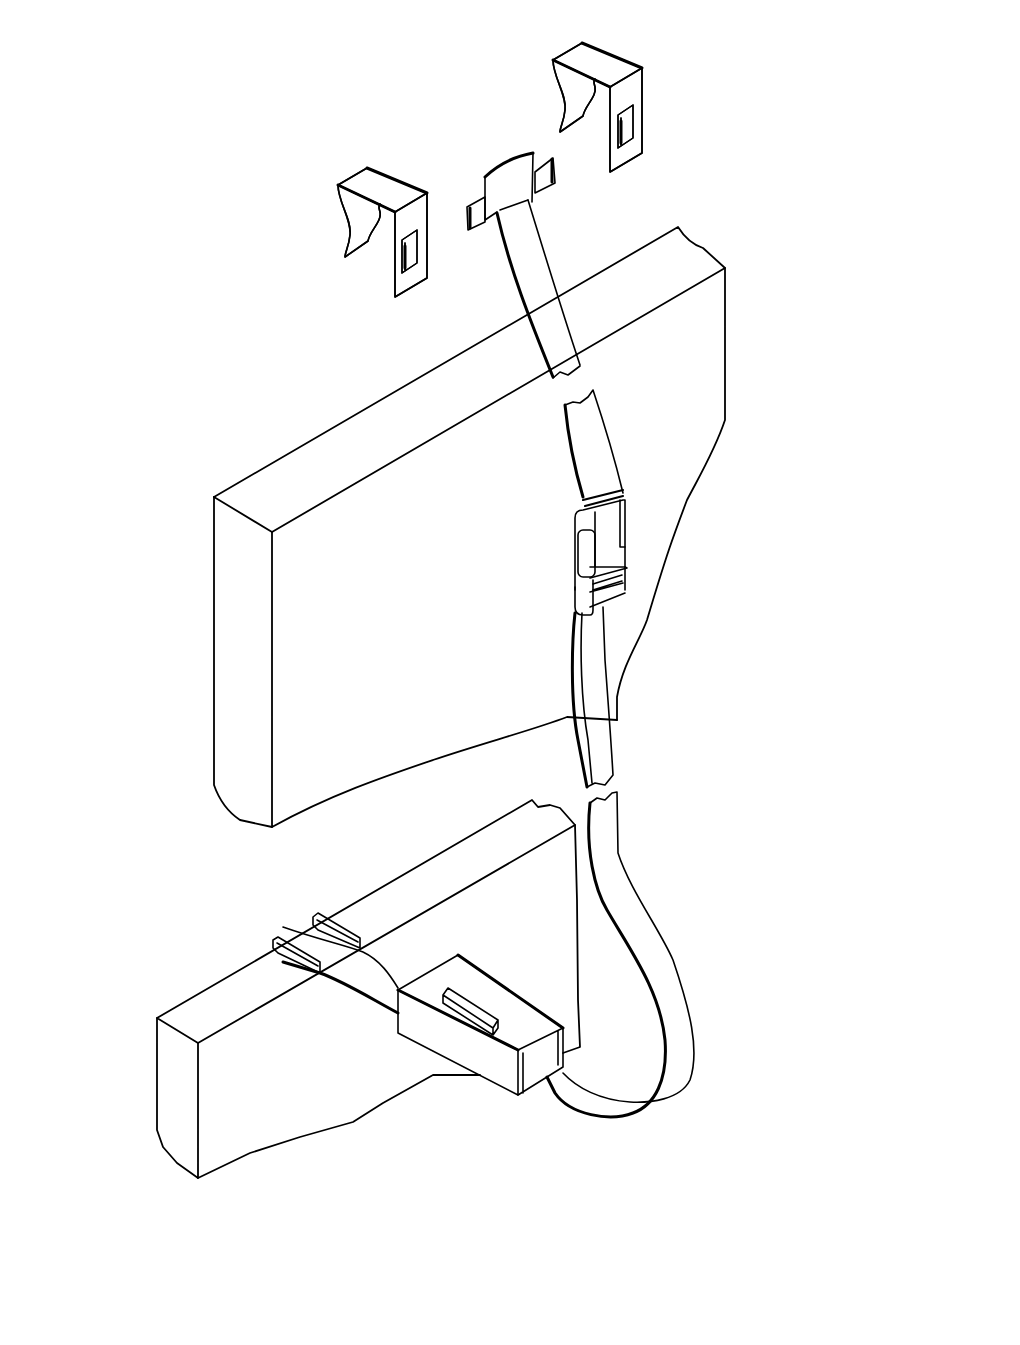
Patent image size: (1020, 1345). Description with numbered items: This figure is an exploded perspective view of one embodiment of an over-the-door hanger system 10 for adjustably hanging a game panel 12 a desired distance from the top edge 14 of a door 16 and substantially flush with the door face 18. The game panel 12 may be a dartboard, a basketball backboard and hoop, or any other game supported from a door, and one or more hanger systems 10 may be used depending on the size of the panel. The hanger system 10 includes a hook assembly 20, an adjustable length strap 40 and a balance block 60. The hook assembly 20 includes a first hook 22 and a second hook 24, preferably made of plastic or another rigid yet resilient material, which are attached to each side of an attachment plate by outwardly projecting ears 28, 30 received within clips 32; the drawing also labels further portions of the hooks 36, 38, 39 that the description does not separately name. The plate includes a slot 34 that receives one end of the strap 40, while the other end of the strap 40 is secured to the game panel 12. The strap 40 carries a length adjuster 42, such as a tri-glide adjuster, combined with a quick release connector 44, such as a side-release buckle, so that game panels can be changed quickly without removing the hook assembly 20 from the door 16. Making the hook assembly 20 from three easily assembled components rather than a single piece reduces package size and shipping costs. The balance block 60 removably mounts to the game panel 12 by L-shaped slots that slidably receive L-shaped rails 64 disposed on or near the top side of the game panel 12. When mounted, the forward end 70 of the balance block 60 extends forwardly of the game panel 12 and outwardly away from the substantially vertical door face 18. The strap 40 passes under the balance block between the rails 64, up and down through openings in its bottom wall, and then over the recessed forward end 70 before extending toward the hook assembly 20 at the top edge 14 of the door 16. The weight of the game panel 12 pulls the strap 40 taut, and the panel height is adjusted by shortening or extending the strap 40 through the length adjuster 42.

The over-the-door hanger system 10 is at (232, 157).
The game panel 12 is at (192, 984).
The top edge 14 is at (300, 465).
The door 16 is at (197, 607).
The door face 18 is at (350, 670).
The hook assembly 20 is at (446, 99).
The first hook 22 is at (352, 180).
The second hook 24 is at (567, 50).
The ear 28 is at (478, 222).
The ear 30 is at (549, 182).
The clip 32 is at (398, 255).
The slot 34 is at (527, 205).
The bracket side wall 36 is at (407, 287).
The curved lip 38 is at (350, 215).
The bracket top wall 39 is at (383, 188).
The adjustable length strap 40 is at (616, 734).
The length adjuster 42 is at (582, 602).
The quick release connector 44 is at (578, 542).
The balance block 60 is at (496, 1097).
The L-shaped rail 64 is at (338, 915).
The forward end 70 is at (540, 1070).